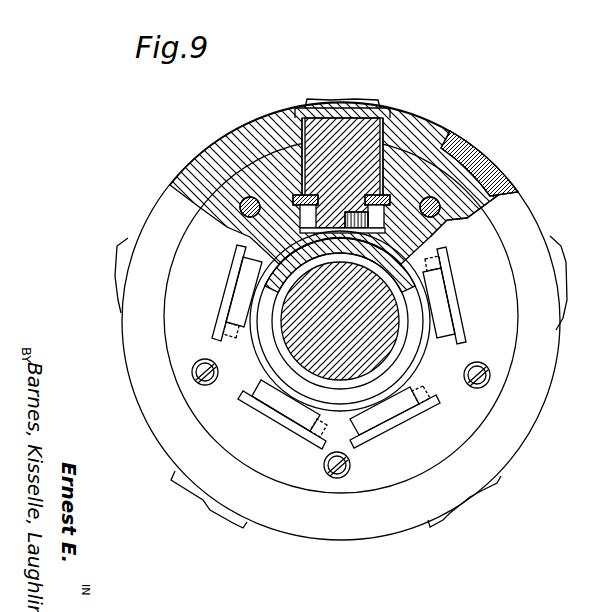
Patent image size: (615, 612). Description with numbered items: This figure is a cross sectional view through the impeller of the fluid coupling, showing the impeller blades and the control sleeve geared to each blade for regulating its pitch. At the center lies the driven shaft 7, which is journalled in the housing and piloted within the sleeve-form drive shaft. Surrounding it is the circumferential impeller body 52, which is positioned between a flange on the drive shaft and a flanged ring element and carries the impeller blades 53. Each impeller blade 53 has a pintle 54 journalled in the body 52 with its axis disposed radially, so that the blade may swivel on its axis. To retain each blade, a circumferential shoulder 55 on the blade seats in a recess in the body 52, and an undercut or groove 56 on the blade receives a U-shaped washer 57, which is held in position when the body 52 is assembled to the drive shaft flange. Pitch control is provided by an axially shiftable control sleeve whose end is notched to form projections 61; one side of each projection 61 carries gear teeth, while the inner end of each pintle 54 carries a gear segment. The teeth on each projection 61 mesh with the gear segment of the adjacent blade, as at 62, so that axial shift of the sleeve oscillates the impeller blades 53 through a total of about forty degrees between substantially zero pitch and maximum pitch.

The driven shaft 7 is at (347, 380).
The impeller body 52 is at (455, 142).
The impeller blades 53 is at (322, 99).
The pintle 54 is at (300, 117).
The circumferential shoulder 55 is at (388, 117).
The undercut or groove 56 is at (402, 143).
The U-shaped washer 57 is at (246, 152).
The projections 61 is at (500, 180).
The meshing of teeth 62 is at (228, 332).